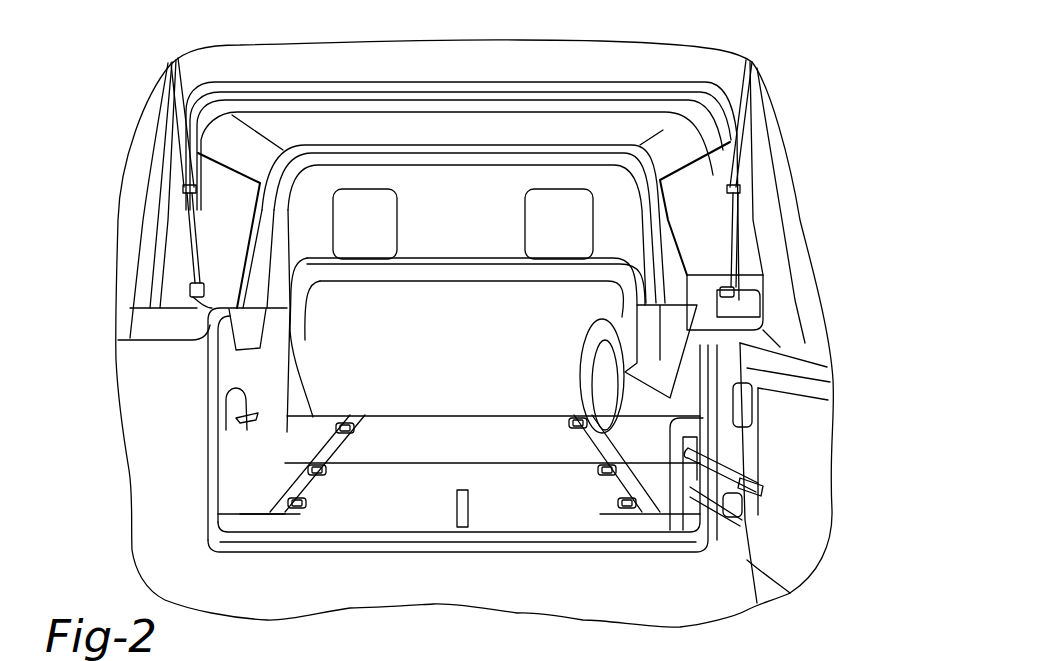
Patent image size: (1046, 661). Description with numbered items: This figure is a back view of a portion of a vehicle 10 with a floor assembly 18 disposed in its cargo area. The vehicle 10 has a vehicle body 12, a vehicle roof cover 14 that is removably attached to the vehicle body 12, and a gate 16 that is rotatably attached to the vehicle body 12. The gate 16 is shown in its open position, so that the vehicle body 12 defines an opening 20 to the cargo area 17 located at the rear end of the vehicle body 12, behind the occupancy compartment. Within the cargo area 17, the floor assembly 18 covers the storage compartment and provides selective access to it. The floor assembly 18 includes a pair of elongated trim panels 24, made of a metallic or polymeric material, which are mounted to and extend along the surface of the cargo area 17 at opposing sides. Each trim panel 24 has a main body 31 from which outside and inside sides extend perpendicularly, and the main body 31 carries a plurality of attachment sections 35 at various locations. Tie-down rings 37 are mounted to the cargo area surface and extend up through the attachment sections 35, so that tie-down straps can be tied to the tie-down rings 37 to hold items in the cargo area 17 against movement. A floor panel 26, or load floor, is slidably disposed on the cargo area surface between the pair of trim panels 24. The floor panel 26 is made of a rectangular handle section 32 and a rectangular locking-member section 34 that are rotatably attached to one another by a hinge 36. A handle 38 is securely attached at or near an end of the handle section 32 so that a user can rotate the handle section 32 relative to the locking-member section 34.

The vehicle 10 is at (786, 68).
The vehicle body 12 is at (207, 370).
The vehicle roof cover 14 is at (778, 145).
The gate 16 is at (810, 372).
The cargo area 17 is at (652, 378).
The floor assembly 18 is at (314, 552).
The opening 20 is at (272, 468).
The elongated trim panels 24 is at (275, 512).
The floor panel 26 is at (516, 516).
The main body 31 is at (280, 427).
The handle section 32 is at (398, 520).
The locking-member section 34 is at (484, 430).
The attachment sections 35 is at (357, 412).
The hinge 36 is at (432, 463).
The tie-down rings 37 is at (282, 497).
The handle 38 is at (465, 528).